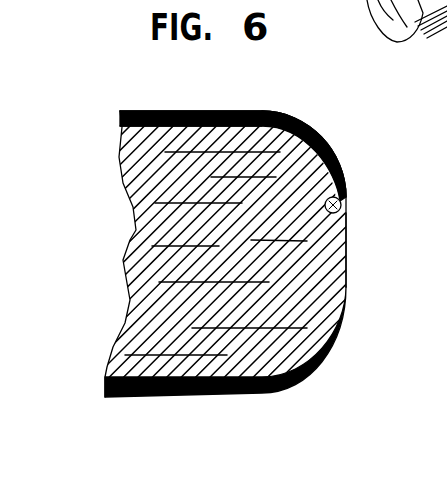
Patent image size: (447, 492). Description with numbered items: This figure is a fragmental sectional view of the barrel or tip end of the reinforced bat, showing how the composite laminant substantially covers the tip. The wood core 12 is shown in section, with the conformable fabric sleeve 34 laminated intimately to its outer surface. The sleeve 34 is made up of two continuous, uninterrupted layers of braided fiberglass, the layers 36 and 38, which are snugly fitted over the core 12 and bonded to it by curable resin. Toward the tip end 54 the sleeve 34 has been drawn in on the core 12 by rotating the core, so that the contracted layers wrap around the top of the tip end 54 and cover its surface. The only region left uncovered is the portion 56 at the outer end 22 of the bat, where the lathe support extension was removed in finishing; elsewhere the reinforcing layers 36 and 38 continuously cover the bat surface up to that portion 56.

The wood core 12 is at (136, 230).
The tip or outer end 22 is at (327, 133).
The conformable fabric sleeve 34 is at (255, 112).
The first sleeve layer 36 is at (135, 122).
The second sleeve layer 38 is at (158, 111).
The tip end 54 is at (341, 223).
The uncovered portion 56 is at (332, 262).